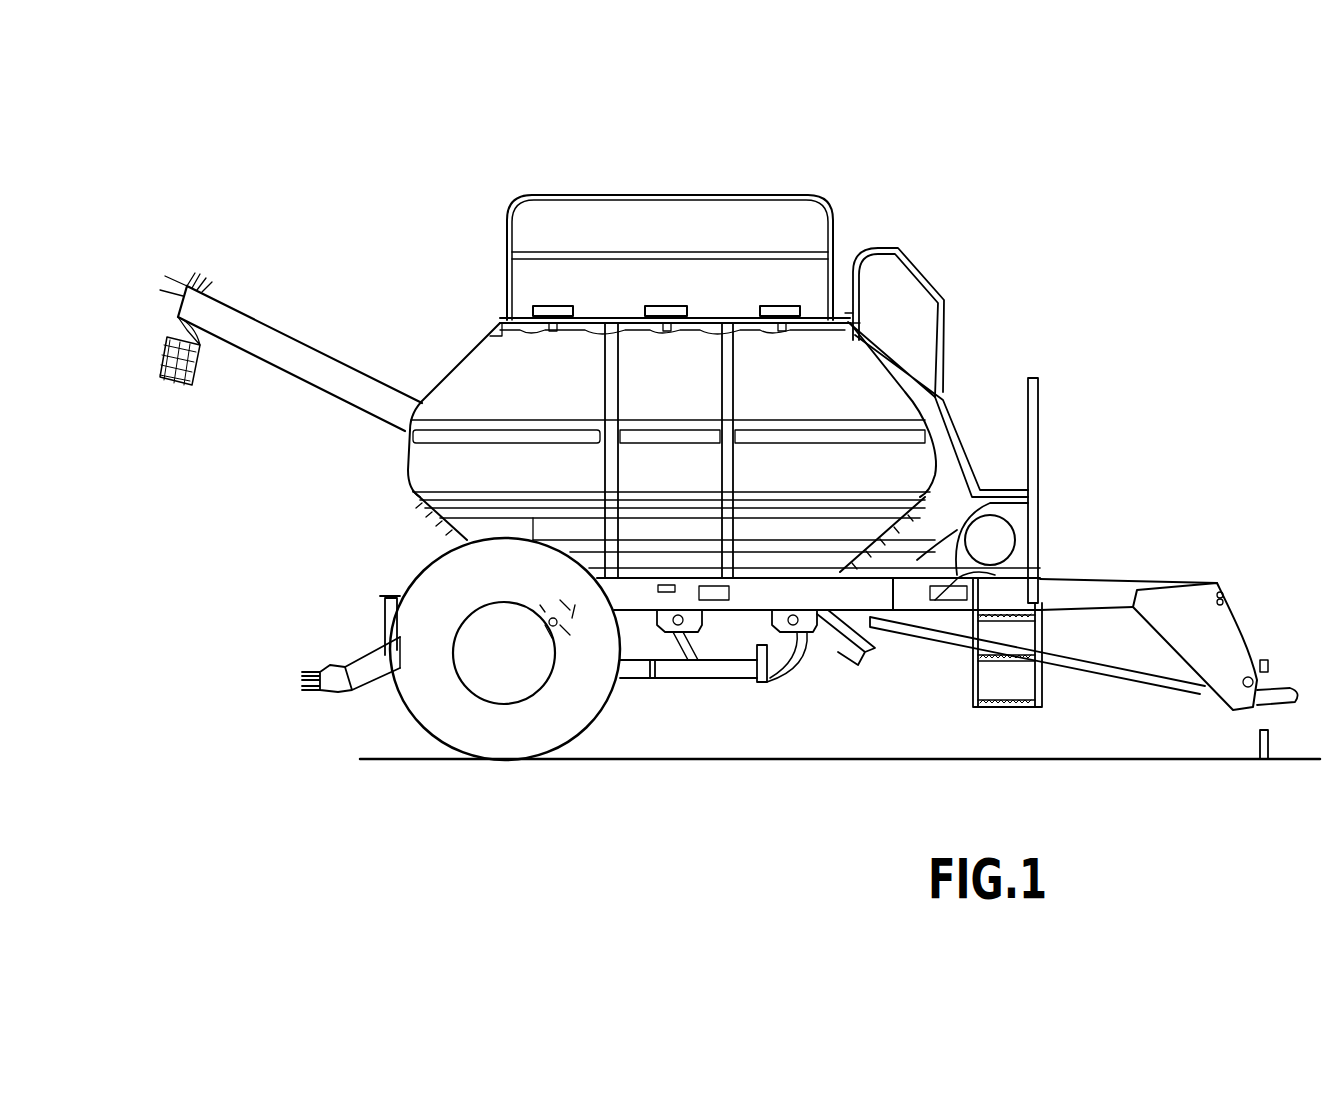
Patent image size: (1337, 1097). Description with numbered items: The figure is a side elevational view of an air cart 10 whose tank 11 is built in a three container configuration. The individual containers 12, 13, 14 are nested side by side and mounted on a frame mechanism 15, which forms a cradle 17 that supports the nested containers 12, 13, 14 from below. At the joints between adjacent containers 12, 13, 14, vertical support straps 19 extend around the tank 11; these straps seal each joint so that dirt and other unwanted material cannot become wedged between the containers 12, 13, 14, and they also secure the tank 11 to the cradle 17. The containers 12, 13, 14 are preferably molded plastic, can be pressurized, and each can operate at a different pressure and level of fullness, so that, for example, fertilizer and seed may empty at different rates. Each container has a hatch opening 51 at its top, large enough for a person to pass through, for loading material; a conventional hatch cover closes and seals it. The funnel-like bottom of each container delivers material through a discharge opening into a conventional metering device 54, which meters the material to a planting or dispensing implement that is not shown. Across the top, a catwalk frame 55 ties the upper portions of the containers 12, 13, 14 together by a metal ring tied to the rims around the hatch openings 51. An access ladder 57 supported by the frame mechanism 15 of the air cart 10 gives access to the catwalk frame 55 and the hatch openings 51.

The air cart 10 is at (333, 204).
The tank 11 is at (362, 305).
The container 12 is at (840, 378).
The container 13 is at (708, 378).
The container 14 is at (580, 378).
The frame mechanism 15 is at (1123, 582).
The cradle 17 is at (420, 505).
The vertical support straps 19 is at (612, 347).
The hatch opening 51 is at (553, 307).
The metering device 54 is at (692, 635).
The catwalk frame 55 is at (638, 193).
The access ladder 57 is at (1043, 530).